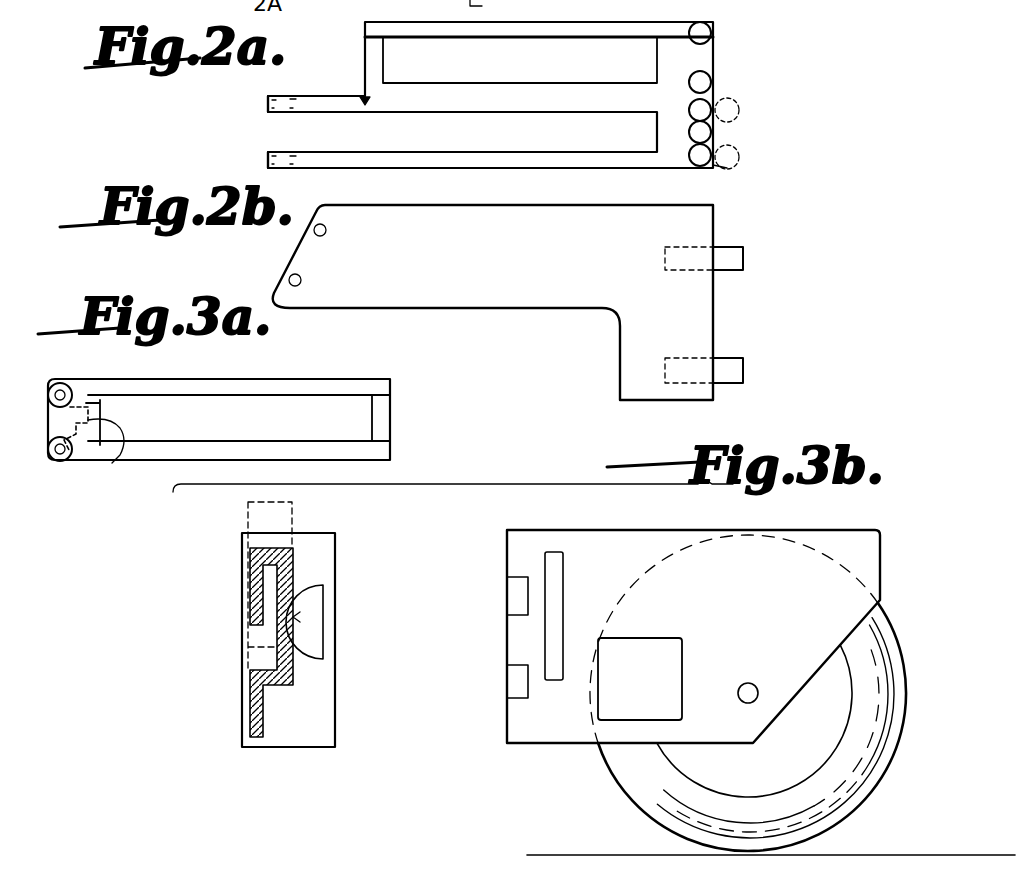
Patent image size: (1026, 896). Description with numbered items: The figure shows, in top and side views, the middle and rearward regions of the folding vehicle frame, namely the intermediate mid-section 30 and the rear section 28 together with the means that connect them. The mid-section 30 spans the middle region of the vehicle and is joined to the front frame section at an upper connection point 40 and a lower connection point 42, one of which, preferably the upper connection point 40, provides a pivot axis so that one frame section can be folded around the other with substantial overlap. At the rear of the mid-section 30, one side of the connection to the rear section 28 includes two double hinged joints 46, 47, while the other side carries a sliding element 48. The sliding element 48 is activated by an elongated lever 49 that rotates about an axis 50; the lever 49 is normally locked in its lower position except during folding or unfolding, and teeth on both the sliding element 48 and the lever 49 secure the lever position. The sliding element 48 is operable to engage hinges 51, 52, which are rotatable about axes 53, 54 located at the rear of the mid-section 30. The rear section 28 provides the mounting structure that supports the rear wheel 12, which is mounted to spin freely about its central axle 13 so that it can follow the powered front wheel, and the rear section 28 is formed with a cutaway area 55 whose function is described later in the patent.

In FIG. 3B, the rear wheel 12 is at (642, 770).
In FIG. 3B, the central axle 13 is at (750, 683).
In FIG. 2A, the rear section 28 is at (620, 23).
In FIG. 3A, the rear section 28 is at (333, 378).
In FIG. 3B, the rear section 28 is at (600, 528).
In FIG. 2A, the mid-section 30 is at (597, 170).
In FIG. 2B, the mid-section 30 is at (554, 294).
In FIG. 2B, the upper connection point 40 is at (326, 234).
In FIG. 2B, the lower connection point 42 is at (301, 282).
In FIG. 2A, the double hinged joint 46 is at (711, 97).
In FIG. 2A, the double hinged joint 47 is at (756, 109).
In FIG. 3A, the sliding element 48 is at (112, 463).
In FIG. 3B, the sliding element 48 is at (256, 559).
In FIG. 3B, the elongated lever 49 is at (250, 652).
In FIG. 3B, the axis 50 is at (323, 622).
In FIG. 2A, the hinge 51 is at (740, 158).
In FIG. 2B, the hinge 51 is at (743, 262).
In FIG. 2A, the hinge 52 is at (764, 186).
In FIG. 2B, the hinge 52 is at (743, 383).
In FIG. 2A, the axis 53 is at (721, 150).
In FIG. 2B, the axis 53 is at (698, 272).
In FIG. 2A, the axis 54 is at (700, 155).
In FIG. 2B, the axis 54 is at (706, 336).
In FIG. 3B, the cutaway area 55 is at (674, 641).